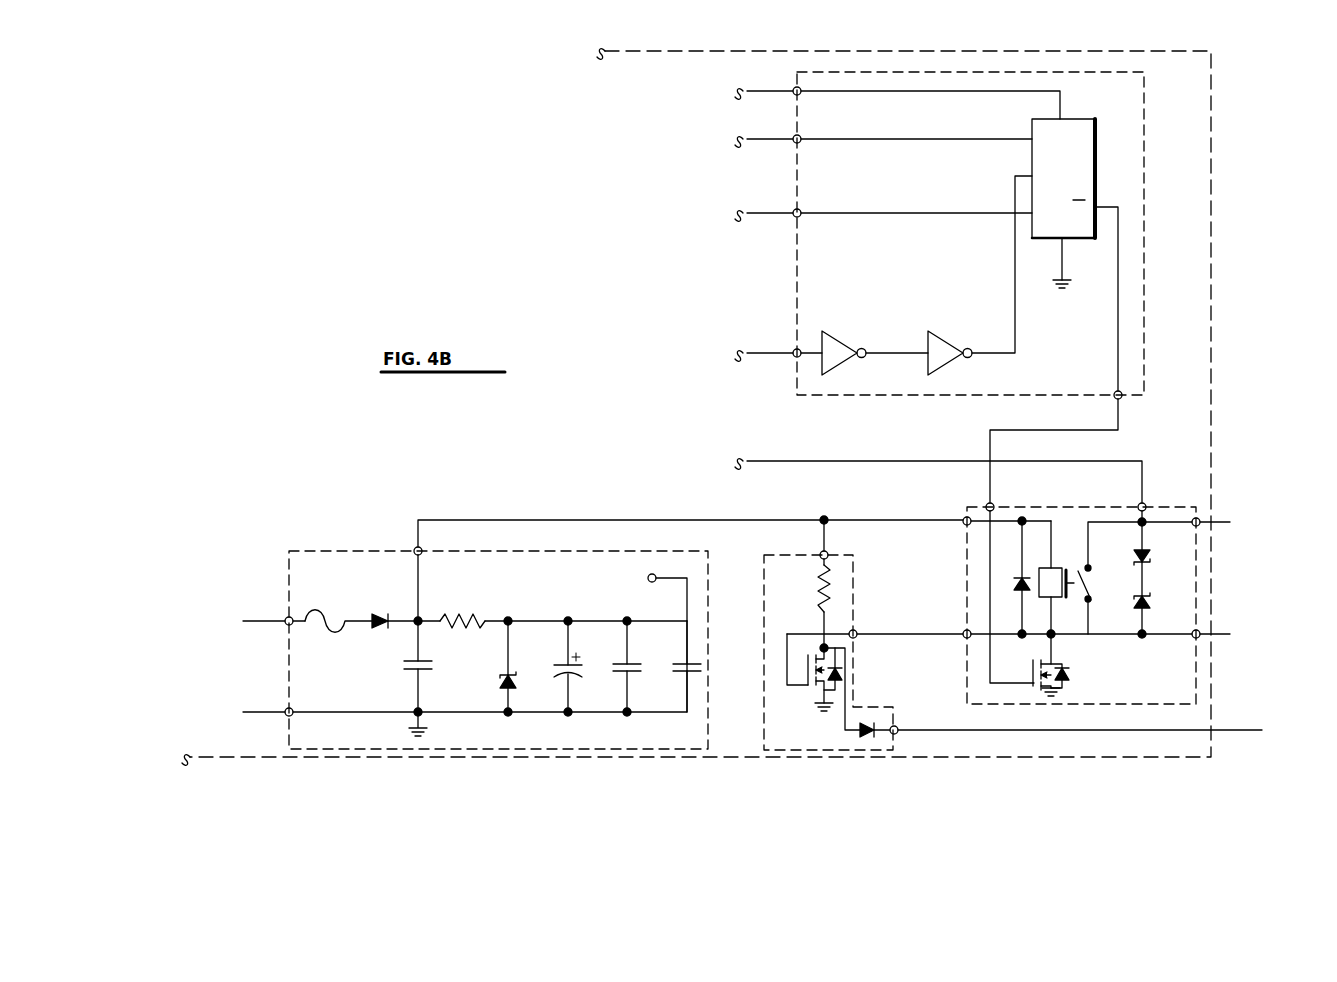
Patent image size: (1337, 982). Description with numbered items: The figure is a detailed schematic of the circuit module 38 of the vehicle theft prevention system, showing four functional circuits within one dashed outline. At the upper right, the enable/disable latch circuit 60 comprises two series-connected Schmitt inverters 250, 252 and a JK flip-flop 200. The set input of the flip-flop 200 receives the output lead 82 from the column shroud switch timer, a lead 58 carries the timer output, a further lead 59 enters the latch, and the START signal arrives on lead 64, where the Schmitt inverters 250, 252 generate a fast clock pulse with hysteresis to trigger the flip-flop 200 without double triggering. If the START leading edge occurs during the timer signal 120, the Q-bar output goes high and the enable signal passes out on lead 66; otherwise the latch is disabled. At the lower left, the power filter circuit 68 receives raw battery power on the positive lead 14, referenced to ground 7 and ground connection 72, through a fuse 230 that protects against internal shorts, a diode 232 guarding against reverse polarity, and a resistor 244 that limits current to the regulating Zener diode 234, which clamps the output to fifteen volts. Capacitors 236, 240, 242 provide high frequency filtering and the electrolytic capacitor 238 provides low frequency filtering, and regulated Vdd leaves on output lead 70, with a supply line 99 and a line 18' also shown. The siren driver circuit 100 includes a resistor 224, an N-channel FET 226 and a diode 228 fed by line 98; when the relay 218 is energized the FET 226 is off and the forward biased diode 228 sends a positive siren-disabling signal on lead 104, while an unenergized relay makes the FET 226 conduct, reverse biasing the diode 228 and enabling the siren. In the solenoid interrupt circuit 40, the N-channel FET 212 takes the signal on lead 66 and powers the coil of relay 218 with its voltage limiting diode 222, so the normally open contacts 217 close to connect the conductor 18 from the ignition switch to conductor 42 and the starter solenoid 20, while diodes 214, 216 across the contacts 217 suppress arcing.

The circuit module 38 is at (1208, 196).
The enable/disable latch circuit 60 is at (800, 183).
The output lead 82 is at (755, 93).
The J input line 59 is at (768, 141).
The lead 58 is at (778, 215).
The lead 64 is at (775, 355).
The Schmitt inverter 250 is at (838, 344).
The Schmitt inverter 252 is at (950, 343).
The JK flip-flop 200 is at (1052, 120).
The lead 66 is at (1062, 408).
The start signal line 18' is at (940, 473).
The supply line 99 is at (742, 520).
The power filter circuit 68 is at (398, 551).
The positive lead 14 is at (276, 621).
The fuse 230 is at (337, 627).
The diode 232 is at (380, 613).
The resistor 244 is at (470, 618).
The output lead 70 is at (664, 582).
The capacitor 236 is at (410, 670).
The ground terminal 7 is at (274, 712).
The Zener diode 234 is at (500, 687).
The electrolytic capacitor 238 is at (562, 675).
The capacitor 240 is at (624, 666).
The capacitor 242 is at (686, 666).
The siren driver circuit 100 is at (815, 555).
The resistor 224 is at (820, 568).
The drive line 98 is at (947, 634).
The ground connection 72 is at (820, 690).
The N-channel FET 226 is at (838, 681).
The diode 228 is at (868, 722).
The solenoid interrupt circuit 40 is at (1096, 507).
The voltage limiting diode 222 is at (1013, 580).
The relay 218 is at (1060, 554).
The relay contacts 217 is at (1092, 590).
The diode 214 is at (1146, 554).
The diode 216 is at (1150, 606).
The N-channel FET 212 is at (1068, 649).
The conductor 18 is at (1254, 506).
The conductor 42 is at (1218, 634).
The starter solenoid 20 is at (1286, 673).
The lead 104 is at (1222, 733).
The timer signal 120 is at (1284, 768).